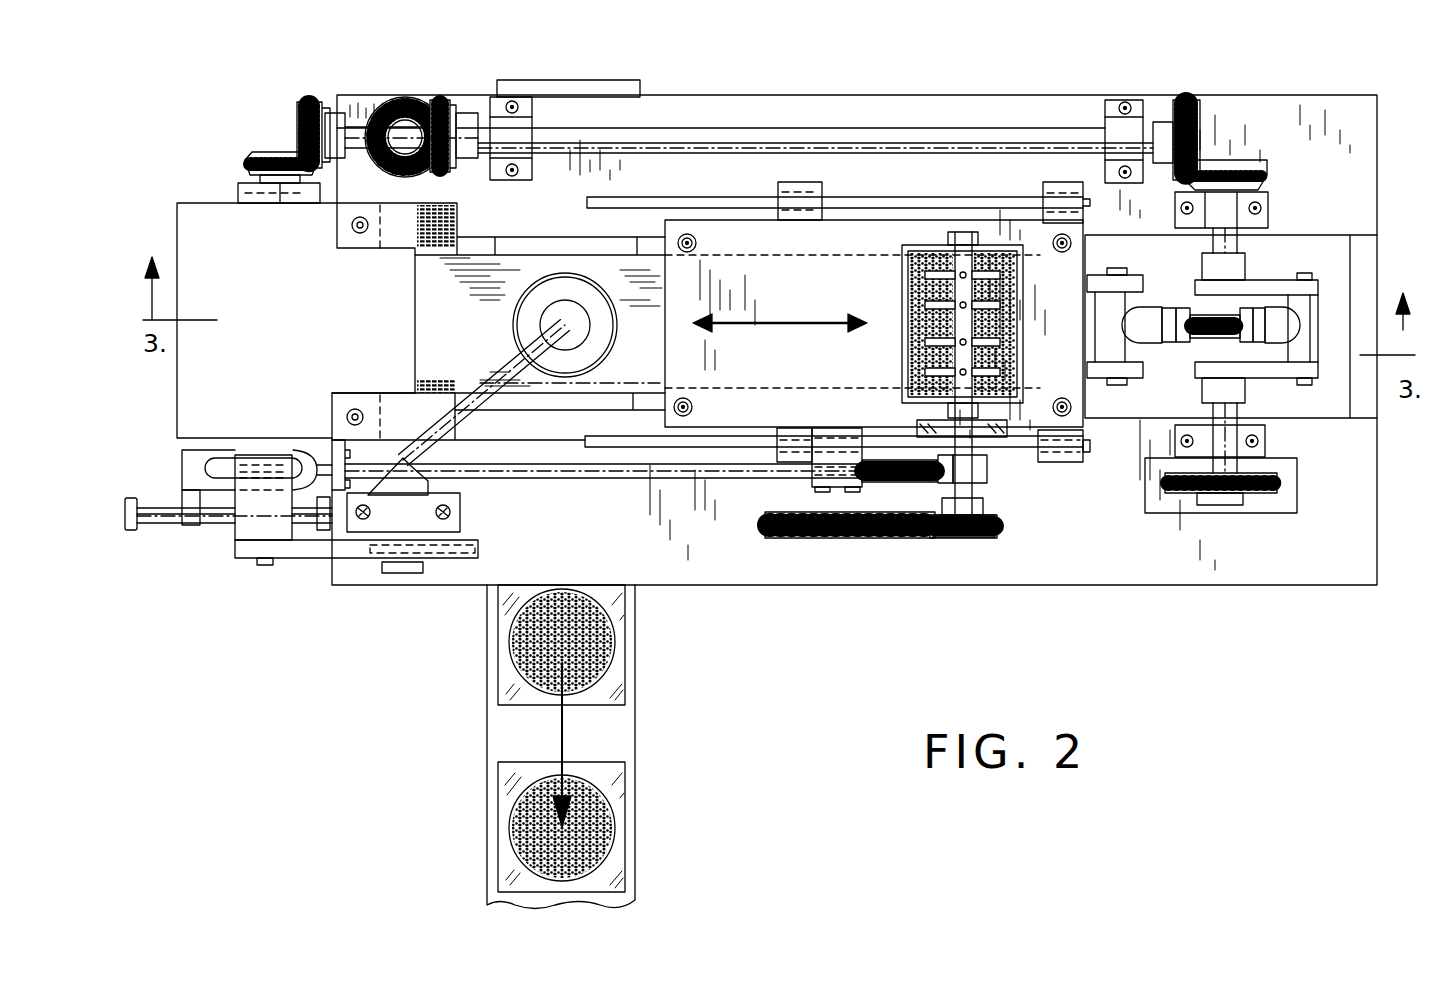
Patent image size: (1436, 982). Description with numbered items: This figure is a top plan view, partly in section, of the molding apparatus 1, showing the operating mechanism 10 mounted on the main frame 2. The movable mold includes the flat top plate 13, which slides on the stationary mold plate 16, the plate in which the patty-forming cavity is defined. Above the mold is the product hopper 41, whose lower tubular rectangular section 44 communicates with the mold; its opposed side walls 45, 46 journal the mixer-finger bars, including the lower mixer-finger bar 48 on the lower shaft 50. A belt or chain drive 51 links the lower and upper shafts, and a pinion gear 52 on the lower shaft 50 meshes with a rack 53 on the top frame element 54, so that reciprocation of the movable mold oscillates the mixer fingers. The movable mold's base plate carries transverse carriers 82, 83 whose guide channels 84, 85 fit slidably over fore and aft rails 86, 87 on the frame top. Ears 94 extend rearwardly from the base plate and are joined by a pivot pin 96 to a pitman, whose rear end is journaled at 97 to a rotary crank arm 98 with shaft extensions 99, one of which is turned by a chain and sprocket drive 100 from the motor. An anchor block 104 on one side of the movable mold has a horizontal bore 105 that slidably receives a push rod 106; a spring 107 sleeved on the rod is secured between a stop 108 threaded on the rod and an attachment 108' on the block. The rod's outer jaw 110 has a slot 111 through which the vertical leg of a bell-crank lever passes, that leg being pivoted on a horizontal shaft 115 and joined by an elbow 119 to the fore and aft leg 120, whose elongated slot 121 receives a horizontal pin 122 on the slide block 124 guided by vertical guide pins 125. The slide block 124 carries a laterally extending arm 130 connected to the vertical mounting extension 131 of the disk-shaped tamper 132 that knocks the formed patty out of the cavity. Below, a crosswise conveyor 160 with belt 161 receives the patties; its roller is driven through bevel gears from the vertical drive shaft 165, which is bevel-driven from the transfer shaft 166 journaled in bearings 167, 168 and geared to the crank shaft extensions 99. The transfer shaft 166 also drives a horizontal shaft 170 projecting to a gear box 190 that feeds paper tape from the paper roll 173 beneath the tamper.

The molding apparatus 1 is at (160, 190).
The main frame 2 is at (1345, 110).
The operating mechanism 10 is at (1072, 178).
The top plate 13 is at (790, 357).
The stationary mold plate 16 is at (470, 285).
The product hopper 41 is at (925, 245).
The tubular rectangular section 44 is at (1005, 320).
The hopper side wall 45 is at (997, 250).
The hopper side wall 46 is at (1000, 395).
The lower mixer-finger bar 48 is at (915, 285).
The lower shaft 50 is at (965, 325).
The belt and pulley or chain and sprocket drive 51 is at (960, 428).
The pinion gear 52 is at (965, 540).
The rack 53 is at (913, 532).
The top frame element 54 is at (705, 585).
The transverse carrier 82 is at (775, 455).
The transverse carrier 83 is at (1085, 463).
The guide channel 84 is at (790, 432).
The guide channel 85 is at (800, 195).
The guide rail 86 is at (655, 450).
The guide rail 87 is at (730, 200).
The ear 94 is at (1095, 280).
The pivot pin 96 is at (1140, 270).
The pitman journal 97 is at (1315, 318).
The rotary crank arm 98 is at (1300, 310).
The shaft extension 99 is at (1265, 285).
The chain and sprocket drive 100 is at (1285, 483).
The anchor block 104 is at (840, 455).
The horizontal bore 105 is at (830, 513).
The push rod 106 is at (585, 465).
The spring 107 is at (880, 482).
The stop 108 is at (1014, 479).
The spring attachment 108' is at (924, 533).
The jaw 110 is at (305, 455).
The slot 111 is at (205, 470).
The horizontal shaft 115 is at (262, 455).
The elbow arrangement 119 is at (250, 525).
The fore and aft leg 120 is at (305, 548).
The elongated slot 121 is at (365, 545).
The horizontal pin 122 is at (400, 573).
The slide block 124 is at (470, 500).
The vertical guide pin 125 is at (403, 512).
The laterally extending arm 130 is at (470, 410).
The vertical mounting extension 131 is at (600, 355).
The tamper 132 is at (565, 285).
The conveyor 160 is at (623, 740).
The belt 161 is at (622, 900).
The vertical drive shaft 165 is at (395, 98).
The transfer shaft 166 is at (685, 137).
The bearing 167 is at (522, 103).
The bearing 168 is at (1095, 118).
The horizontal shaft 170 is at (240, 195).
The paper roll 173 is at (190, 243).
The gear box 190 is at (238, 195).